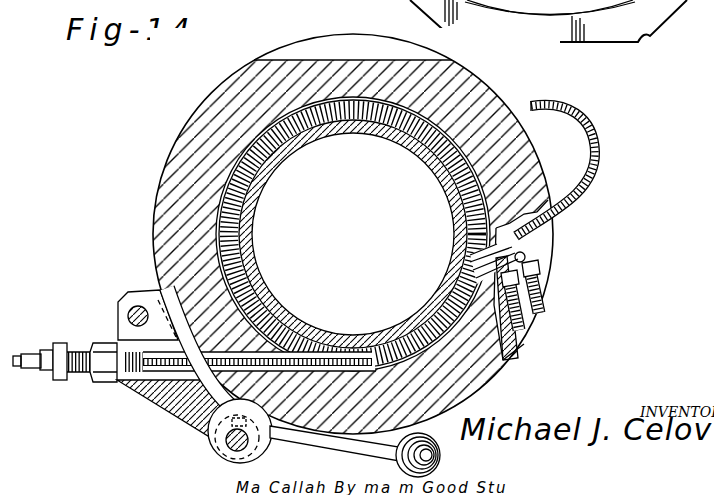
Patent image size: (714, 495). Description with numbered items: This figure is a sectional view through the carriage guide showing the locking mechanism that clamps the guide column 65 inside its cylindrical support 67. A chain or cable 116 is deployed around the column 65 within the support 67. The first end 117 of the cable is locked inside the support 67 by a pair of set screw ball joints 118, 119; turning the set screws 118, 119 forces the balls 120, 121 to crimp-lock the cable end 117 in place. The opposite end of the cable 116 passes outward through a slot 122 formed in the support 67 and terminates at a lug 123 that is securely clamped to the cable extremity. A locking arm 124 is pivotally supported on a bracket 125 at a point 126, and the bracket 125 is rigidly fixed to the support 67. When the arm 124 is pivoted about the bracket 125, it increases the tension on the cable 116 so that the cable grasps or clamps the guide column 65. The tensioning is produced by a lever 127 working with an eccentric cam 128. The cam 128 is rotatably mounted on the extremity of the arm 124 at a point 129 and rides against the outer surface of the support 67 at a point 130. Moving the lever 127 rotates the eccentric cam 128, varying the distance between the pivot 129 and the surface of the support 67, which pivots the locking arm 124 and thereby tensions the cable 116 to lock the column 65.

The guide column 65 is at (268, 163).
The cylindrical support 67 is at (190, 119).
The chain or cable 116 is at (318, 106).
The first end of cable 117 is at (599, 160).
The set screw ball joint 118 is at (527, 338).
The set screw ball joint 119 is at (543, 298).
The ball 120 is at (505, 281).
The ball 121 is at (525, 258).
The slot 122 is at (263, 333).
The lug 123 is at (110, 342).
The locking arm 124 is at (150, 397).
The bracket 125 is at (132, 293).
The pivot point 126 is at (128, 311).
The lever 127 is at (350, 452).
The eccentric cam 128 is at (236, 462).
The pivot point of cam 129 is at (226, 444).
The contact point 130 is at (218, 411).